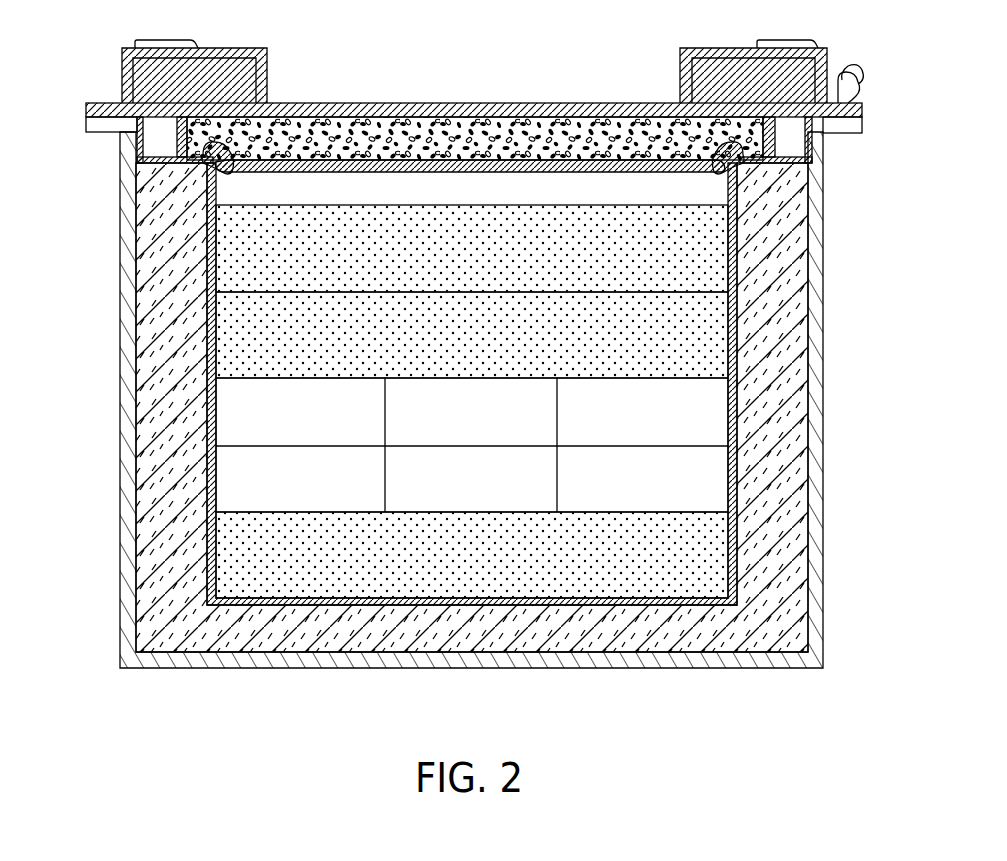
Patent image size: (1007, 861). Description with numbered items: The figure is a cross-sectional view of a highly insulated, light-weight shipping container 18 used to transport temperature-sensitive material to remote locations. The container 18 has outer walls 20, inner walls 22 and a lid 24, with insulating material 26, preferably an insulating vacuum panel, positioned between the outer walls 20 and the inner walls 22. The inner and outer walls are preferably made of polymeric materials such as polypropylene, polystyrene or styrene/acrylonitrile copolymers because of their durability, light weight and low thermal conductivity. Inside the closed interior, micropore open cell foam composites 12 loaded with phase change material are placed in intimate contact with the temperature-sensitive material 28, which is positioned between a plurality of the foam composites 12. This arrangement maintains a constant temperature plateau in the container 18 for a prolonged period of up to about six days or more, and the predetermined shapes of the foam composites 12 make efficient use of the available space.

The highly insulated, light-weight container 18 is at (456, 354).
The outer walls 20 is at (824, 340).
The inner walls 22 is at (740, 258).
The lid 24 is at (314, 100).
The insulating material 26 is at (800, 436).
The temperature-sensitive material 28 is at (375, 503).
The micropore open cell foam composite 12 is at (312, 572).